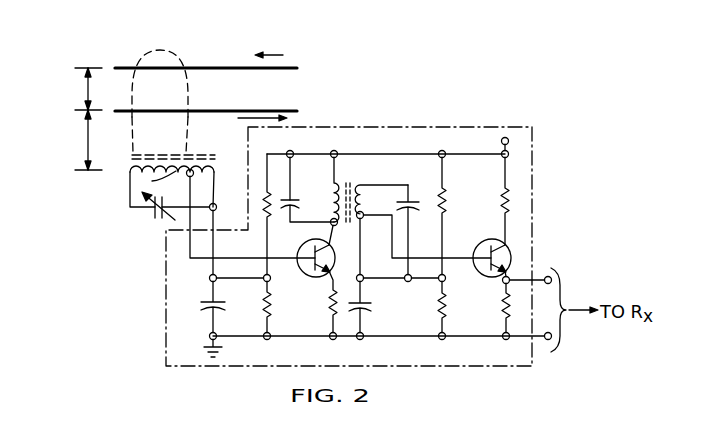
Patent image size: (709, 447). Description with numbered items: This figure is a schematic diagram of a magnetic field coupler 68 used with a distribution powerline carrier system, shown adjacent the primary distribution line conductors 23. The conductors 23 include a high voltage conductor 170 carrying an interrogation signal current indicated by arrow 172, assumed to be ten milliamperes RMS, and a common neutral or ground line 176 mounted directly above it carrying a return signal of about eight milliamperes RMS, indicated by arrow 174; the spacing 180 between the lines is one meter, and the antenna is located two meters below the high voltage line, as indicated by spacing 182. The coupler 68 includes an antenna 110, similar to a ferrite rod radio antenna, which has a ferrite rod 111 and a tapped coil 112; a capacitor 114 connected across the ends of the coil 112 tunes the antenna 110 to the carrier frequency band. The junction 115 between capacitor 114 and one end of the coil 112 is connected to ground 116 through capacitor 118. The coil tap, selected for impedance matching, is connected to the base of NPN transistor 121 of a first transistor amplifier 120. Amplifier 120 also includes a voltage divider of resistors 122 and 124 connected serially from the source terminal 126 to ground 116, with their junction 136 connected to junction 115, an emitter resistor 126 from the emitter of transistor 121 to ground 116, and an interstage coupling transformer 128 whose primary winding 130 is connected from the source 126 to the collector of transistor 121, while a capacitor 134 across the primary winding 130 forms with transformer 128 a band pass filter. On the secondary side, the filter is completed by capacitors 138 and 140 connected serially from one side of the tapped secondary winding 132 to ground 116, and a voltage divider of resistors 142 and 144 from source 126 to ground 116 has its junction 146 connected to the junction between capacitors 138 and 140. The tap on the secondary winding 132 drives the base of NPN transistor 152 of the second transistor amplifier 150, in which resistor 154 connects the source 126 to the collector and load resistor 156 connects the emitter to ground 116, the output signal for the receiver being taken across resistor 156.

The primary distribution line conductors 23 is at (291, 69).
The magnetic field coupler 68 is at (243, 218).
The antenna 110 is at (128, 165).
The ferrite rod 111 is at (138, 155).
The tapped coil 112 is at (207, 164).
The capacitor 114 is at (156, 222).
The junction 115 is at (215, 204).
The ground 116 is at (422, 125).
The capacitor 118 is at (212, 313).
The first transistor amplifier 120 is at (304, 266).
The NPN transistor 121 is at (300, 249).
The resistor 122 is at (263, 214).
The resistor 124 is at (262, 302).
The terminal / resistor 126 is at (325, 312).
The interstage coupling transformer 128 is at (367, 176).
The primary winding 130 is at (333, 186).
The tapped secondary winding 132 is at (407, 196).
The capacitor 134 is at (306, 187).
The junction 136 is at (268, 276).
The capacitor 138 is at (428, 178).
The capacitor 140 is at (398, 299).
The resistor 142 is at (447, 198).
The resistor 144 is at (435, 316).
The junction 146 is at (446, 282).
The second transistor amplifier 150 is at (487, 235).
The NPN transistor 152 is at (480, 278).
The resistor 154 is at (498, 209).
The load resistor 156 is at (498, 312).
The high voltage conductor 170 is at (160, 135).
The arrow 172 is at (248, 124).
The arrow 174 is at (272, 55).
The common neutral or ground line 176 is at (160, 83).
The spacing 180 is at (92, 87).
The spacing 182 is at (92, 127).